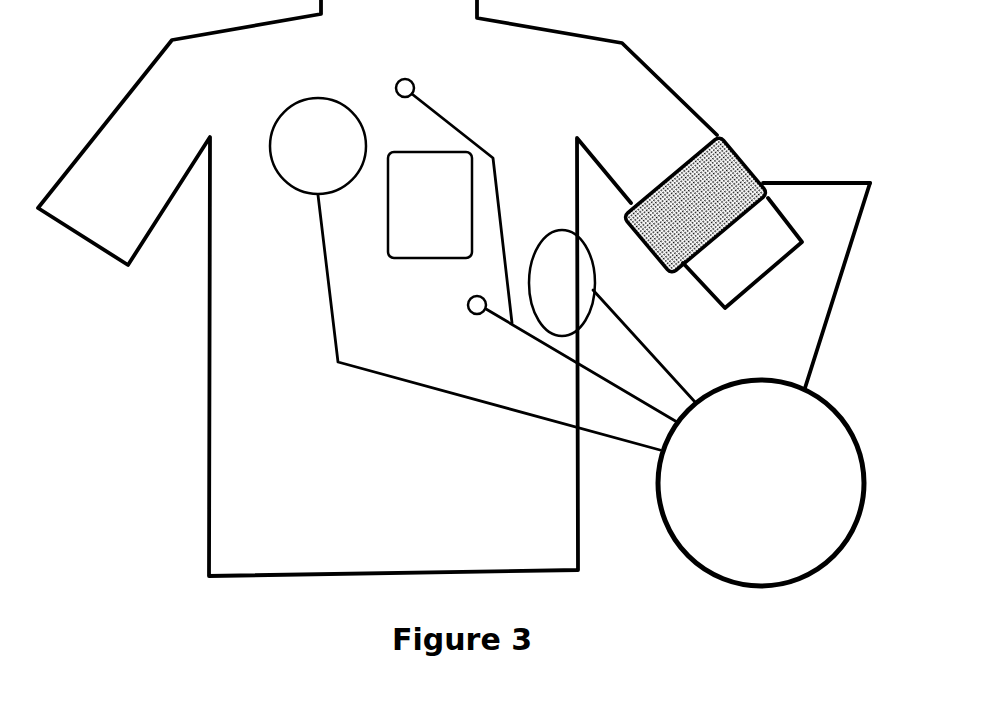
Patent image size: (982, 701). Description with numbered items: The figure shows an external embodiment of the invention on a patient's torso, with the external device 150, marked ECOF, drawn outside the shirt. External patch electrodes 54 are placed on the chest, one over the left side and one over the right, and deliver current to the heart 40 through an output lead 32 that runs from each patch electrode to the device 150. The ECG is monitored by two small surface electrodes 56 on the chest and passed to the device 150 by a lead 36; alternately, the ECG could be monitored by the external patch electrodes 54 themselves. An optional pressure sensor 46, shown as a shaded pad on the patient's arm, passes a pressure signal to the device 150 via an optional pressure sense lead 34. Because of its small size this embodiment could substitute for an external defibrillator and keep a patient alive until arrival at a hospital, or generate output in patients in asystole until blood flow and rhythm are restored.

The output lead 32 is at (517, 337).
The pressure sense lead 34 is at (837, 285).
The lead 36 is at (581, 365).
The heart 40 is at (430, 205).
The pressure sensor 46 is at (738, 142).
The external patch electrodes 54 is at (432, 217).
The surface electrodes 56 is at (454, 194).
The device 150 is at (858, 438).